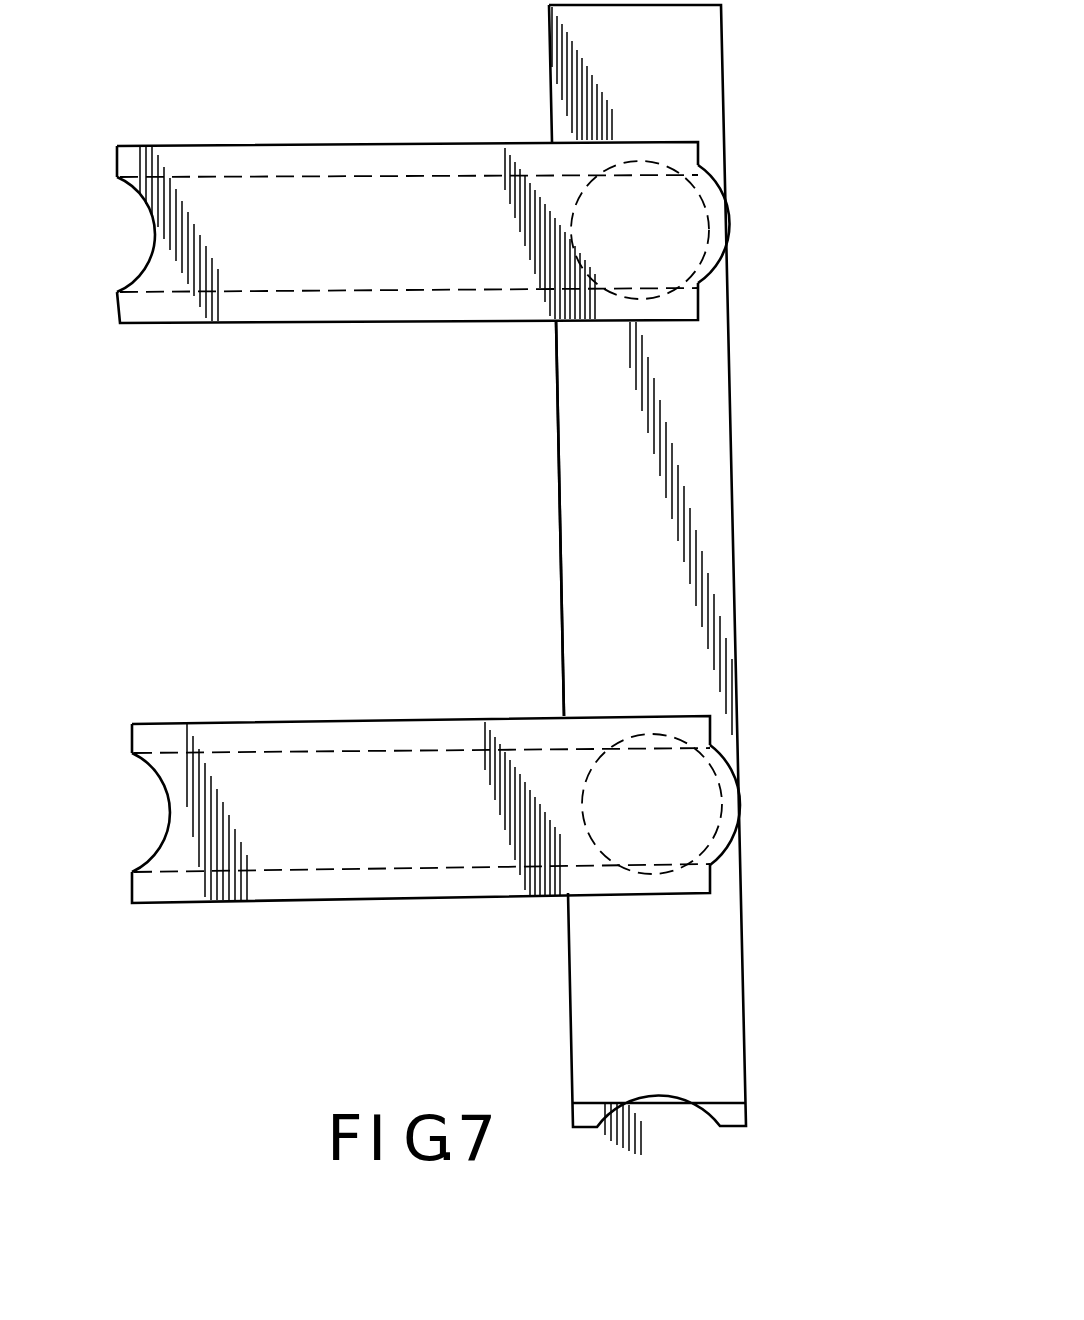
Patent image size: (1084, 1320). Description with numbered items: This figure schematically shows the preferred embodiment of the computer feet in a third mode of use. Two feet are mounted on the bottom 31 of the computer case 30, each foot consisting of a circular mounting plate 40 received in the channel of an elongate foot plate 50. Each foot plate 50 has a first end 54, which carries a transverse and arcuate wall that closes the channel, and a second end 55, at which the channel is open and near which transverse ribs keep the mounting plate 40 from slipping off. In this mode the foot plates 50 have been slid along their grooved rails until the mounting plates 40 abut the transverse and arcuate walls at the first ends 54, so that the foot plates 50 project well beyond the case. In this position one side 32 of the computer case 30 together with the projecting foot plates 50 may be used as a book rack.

The computer case 30 is at (552, 508).
The bottom of the computer case 31 is at (575, 428).
The side wall of the computer case 32 is at (560, 577).
The mounting plate 40 is at (684, 296).
The foot plate 50 is at (330, 330).
The first end 54 is at (722, 228).
The second end 55 is at (153, 235).